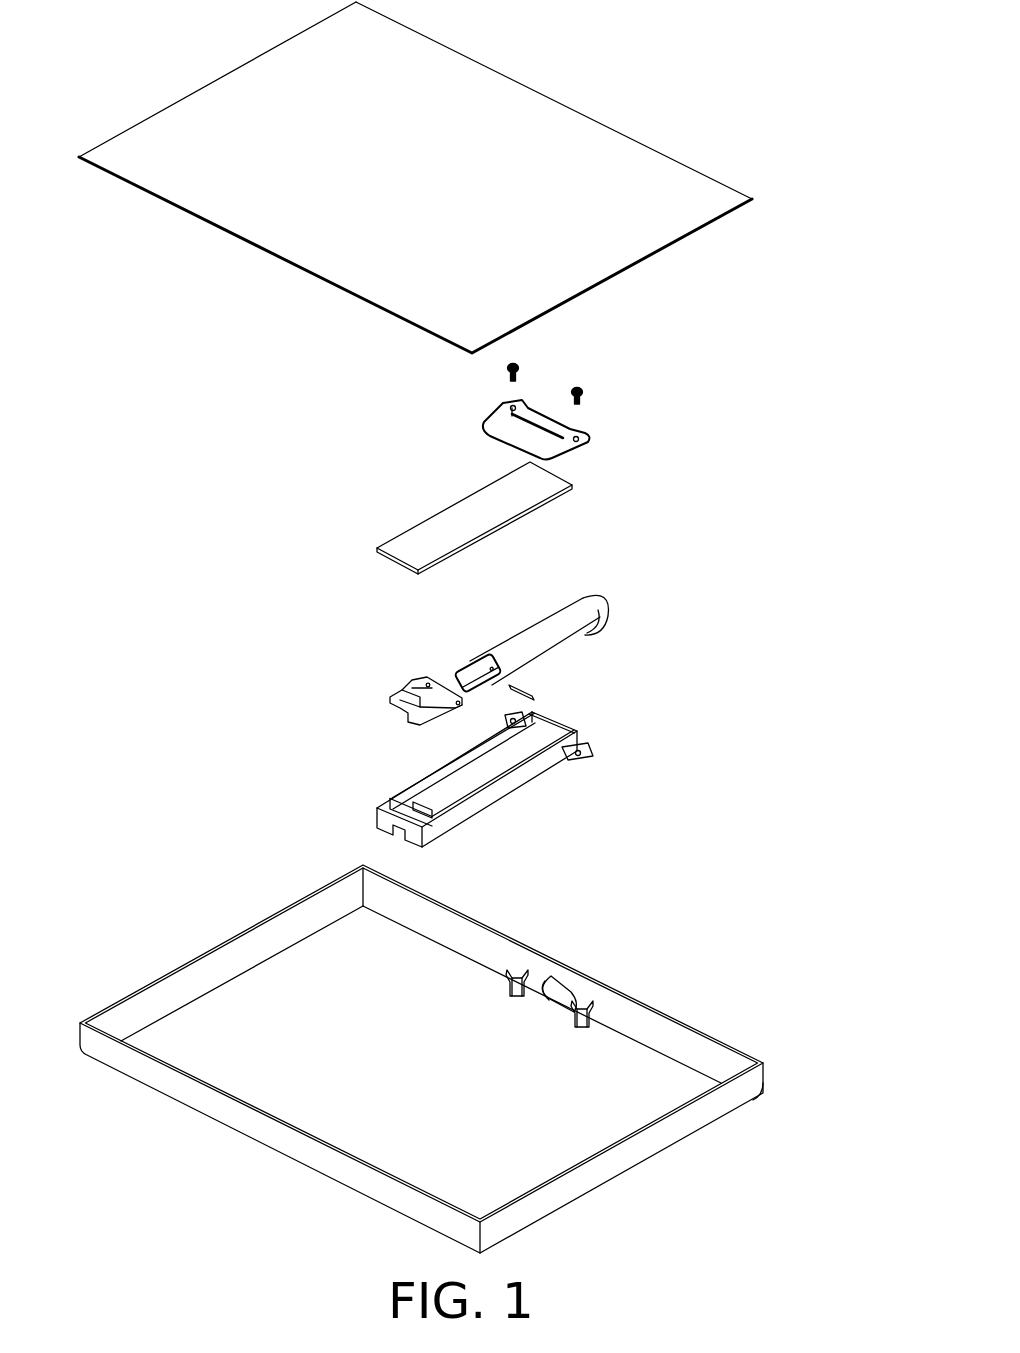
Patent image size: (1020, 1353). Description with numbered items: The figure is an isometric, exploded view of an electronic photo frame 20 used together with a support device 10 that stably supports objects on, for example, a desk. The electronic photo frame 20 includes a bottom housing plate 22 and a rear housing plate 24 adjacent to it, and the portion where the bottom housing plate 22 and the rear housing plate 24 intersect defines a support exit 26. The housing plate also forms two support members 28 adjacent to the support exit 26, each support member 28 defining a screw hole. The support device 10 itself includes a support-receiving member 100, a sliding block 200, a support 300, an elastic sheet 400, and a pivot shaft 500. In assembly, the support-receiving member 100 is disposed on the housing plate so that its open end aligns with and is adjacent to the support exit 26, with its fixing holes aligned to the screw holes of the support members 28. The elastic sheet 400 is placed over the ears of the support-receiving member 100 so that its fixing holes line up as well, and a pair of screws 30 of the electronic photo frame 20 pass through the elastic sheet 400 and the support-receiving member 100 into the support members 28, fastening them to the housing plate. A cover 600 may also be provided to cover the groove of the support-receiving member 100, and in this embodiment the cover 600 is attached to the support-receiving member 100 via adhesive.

The support device 10 is at (370, 605).
The electronic photo frame 20 is at (641, 42).
The bottom housing plate 22 is at (421, 1053).
The rear housing plate 24 is at (447, 928).
The support exit 26 is at (562, 987).
The support members 28 is at (513, 973).
The screws 30 is at (505, 371).
The support-receiving member 100 is at (437, 772).
The sliding block 200 is at (413, 687).
The support 300 is at (520, 643).
The elastic sheet 400 is at (505, 428).
The pivot shaft 500 is at (523, 688).
The cover 600 is at (435, 530).